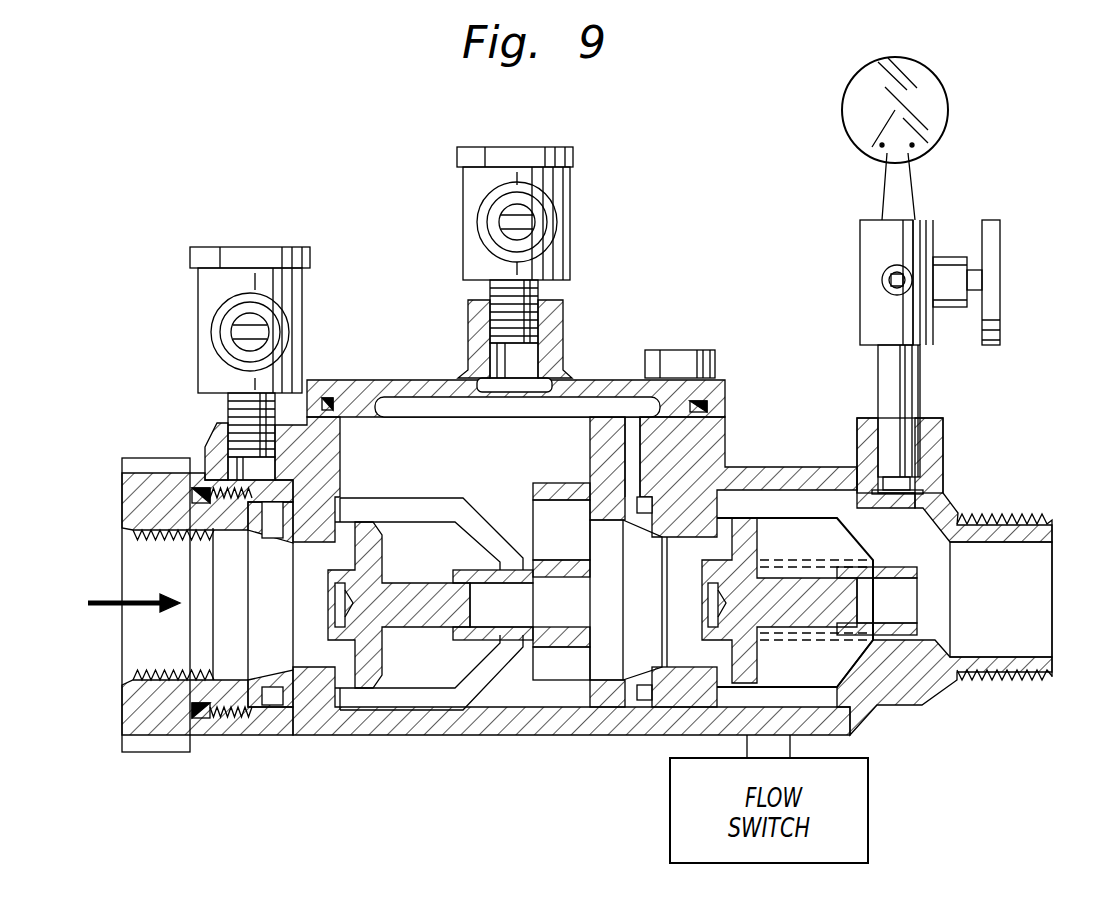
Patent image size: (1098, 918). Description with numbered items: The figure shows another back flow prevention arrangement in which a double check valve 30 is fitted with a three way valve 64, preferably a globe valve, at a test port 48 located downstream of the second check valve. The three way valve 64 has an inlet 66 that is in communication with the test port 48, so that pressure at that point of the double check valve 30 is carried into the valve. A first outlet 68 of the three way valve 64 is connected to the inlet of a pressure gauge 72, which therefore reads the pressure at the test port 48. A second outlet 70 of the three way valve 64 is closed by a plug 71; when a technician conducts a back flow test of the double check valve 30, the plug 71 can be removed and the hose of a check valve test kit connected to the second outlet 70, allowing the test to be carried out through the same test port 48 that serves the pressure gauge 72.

The double check valve 30 is at (508, 735).
The test port 48 is at (943, 433).
The three way valve 64 is at (937, 232).
The inlet 66 is at (877, 350).
The first outlet 68 is at (927, 222).
The second outlet 70 is at (882, 272).
The plug 71 is at (915, 288).
The pressure gauge 72 is at (948, 90).